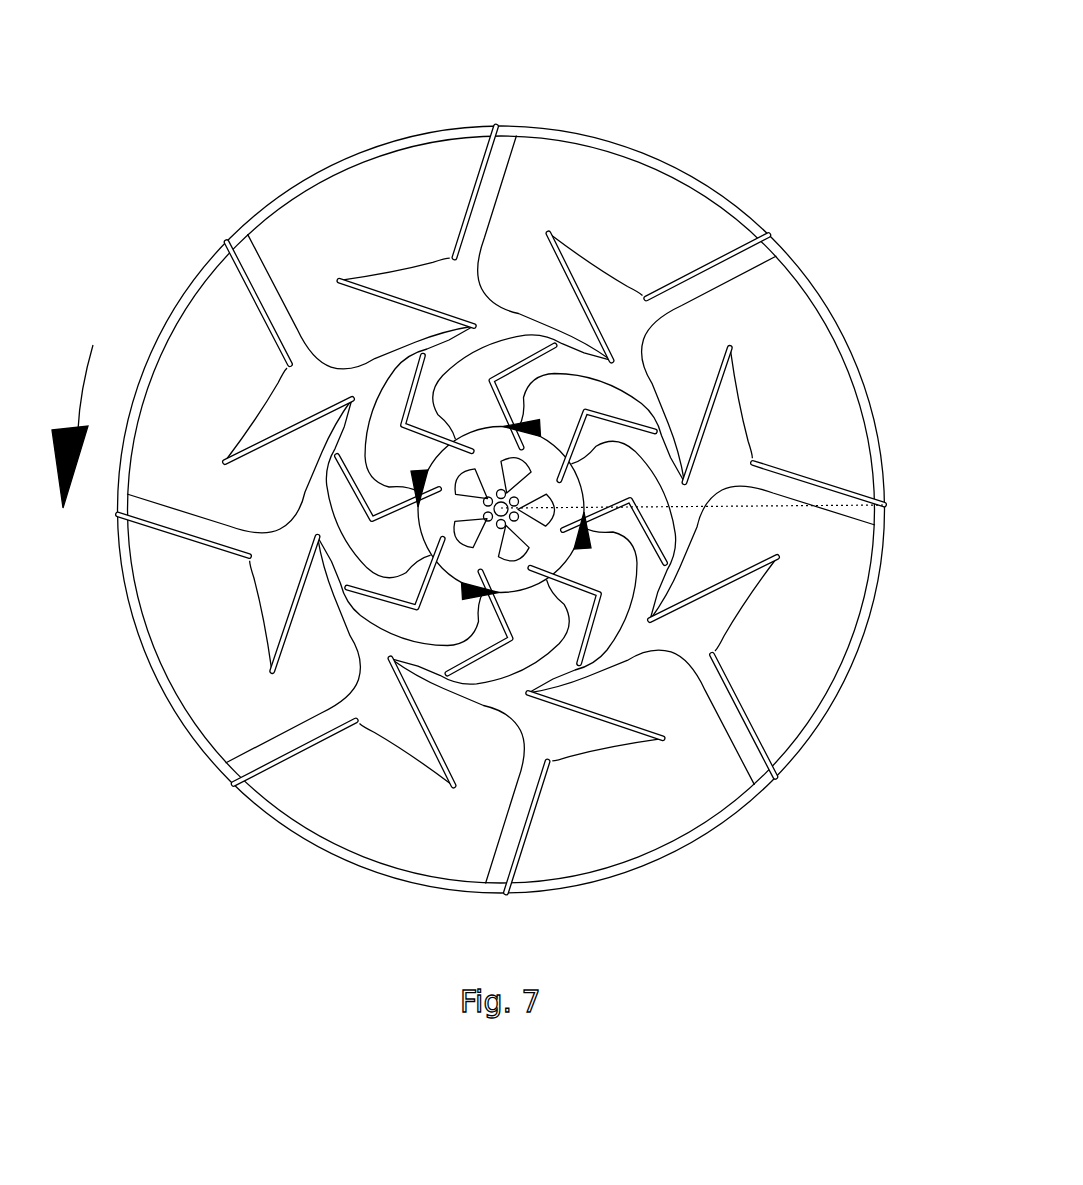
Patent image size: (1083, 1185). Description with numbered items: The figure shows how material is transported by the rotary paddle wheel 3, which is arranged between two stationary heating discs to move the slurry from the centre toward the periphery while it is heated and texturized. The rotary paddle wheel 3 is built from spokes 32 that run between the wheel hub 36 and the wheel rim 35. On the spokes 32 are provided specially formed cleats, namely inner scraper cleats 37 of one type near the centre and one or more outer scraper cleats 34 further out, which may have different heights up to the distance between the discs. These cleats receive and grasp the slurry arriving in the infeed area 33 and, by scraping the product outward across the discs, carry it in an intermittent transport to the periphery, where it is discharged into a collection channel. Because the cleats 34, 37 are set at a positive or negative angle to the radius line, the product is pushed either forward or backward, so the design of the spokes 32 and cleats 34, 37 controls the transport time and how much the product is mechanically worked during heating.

The rotary paddle wheel 3 is at (146, 245).
The spokes 32 is at (520, 165).
The infeed area 33 is at (467, 560).
The outer scraper cleats 34 is at (480, 120).
The wheel rim 35 is at (737, 812).
The wheel hub 36 is at (427, 523).
The inner scraper cleats 37 is at (522, 358).